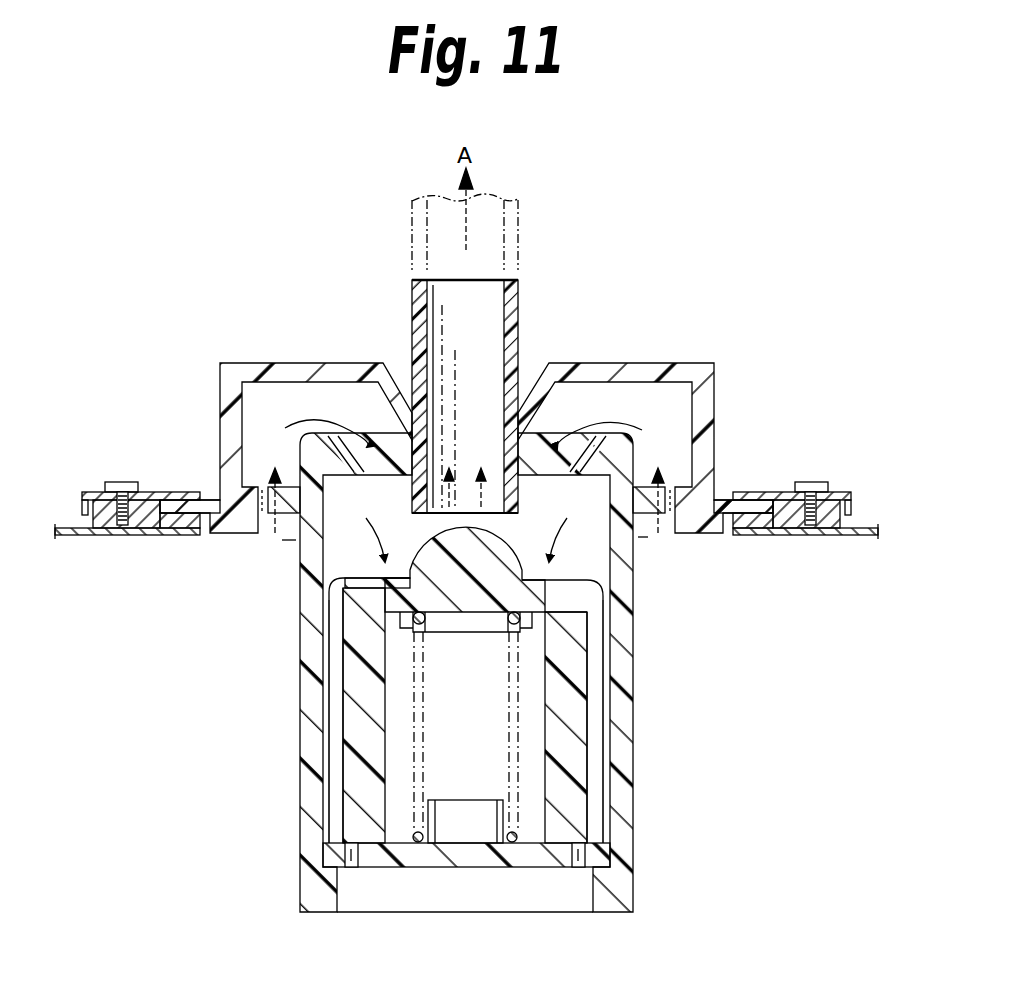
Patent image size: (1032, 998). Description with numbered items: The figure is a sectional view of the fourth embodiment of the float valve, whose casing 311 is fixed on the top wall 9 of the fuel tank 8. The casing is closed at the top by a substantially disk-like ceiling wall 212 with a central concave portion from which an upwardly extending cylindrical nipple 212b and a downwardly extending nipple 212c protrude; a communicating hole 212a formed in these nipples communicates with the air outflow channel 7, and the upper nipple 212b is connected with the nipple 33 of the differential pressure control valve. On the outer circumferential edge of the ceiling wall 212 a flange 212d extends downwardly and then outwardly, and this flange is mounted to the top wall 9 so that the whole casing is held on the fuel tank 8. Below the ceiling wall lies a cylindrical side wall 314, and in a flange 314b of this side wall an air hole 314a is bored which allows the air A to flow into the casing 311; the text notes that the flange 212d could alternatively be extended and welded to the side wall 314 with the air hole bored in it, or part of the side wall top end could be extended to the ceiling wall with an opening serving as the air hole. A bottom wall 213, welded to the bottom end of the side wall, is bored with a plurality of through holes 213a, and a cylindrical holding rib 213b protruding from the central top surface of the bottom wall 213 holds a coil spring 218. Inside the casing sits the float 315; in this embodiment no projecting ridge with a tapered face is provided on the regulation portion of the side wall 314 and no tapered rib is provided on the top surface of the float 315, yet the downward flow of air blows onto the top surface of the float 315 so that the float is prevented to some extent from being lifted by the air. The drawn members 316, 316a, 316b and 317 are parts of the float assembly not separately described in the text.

The air outflow channel 7 is at (487, 200).
The nipple of the differential pressure control valve 33 is at (508, 228).
The fuel tank 8 is at (867, 518).
The top wall of the fuel tank 9 is at (853, 538).
The ceiling wall 212 is at (650, 372).
The communicating hole 212a is at (483, 335).
The upwardly extending cylindrical nipple 212b is at (420, 296).
The downwardly extending nipple 212c is at (513, 493).
The flange 212d is at (688, 498).
The bottom wall 213 is at (417, 867).
The through holes 213a is at (355, 870).
The cylindrical holding rib 213b is at (493, 841).
The coil spring 218 is at (520, 846).
The casing 311 is at (648, 766).
The side wall 314 is at (622, 625).
The air hole 314a is at (266, 520).
The flange of the side wall 314b is at (686, 494).
The float 315 is at (322, 789).
The valve body 316 is at (208, 647).
The lower valve member 316a is at (360, 736).
The upper valve member 316b is at (403, 595).
The valve head 317 is at (484, 562).